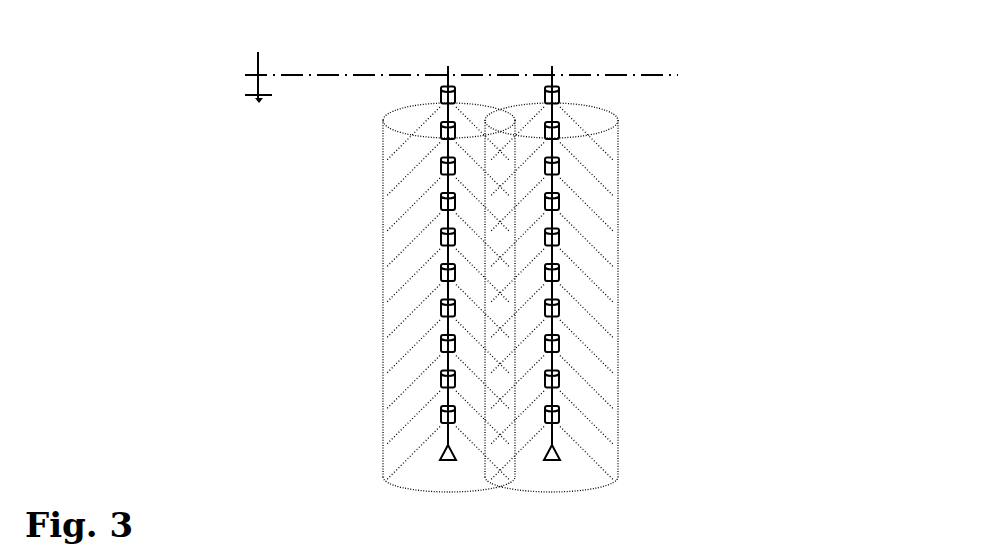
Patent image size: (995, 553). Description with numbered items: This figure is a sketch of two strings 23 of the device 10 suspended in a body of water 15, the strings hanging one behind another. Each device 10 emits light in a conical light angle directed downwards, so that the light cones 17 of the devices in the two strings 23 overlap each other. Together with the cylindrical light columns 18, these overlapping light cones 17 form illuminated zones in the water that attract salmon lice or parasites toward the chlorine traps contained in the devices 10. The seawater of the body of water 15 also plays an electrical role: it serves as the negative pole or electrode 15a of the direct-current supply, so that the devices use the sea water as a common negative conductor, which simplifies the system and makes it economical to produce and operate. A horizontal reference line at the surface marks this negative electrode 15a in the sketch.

The device 10 is at (588, 263).
The body of water 15 is at (838, 284).
The negative pole (electrode) 15a is at (254, 70).
The light cone 17 is at (494, 294).
The cylindrical light column 18 is at (501, 297).
The string 23 is at (507, 54).